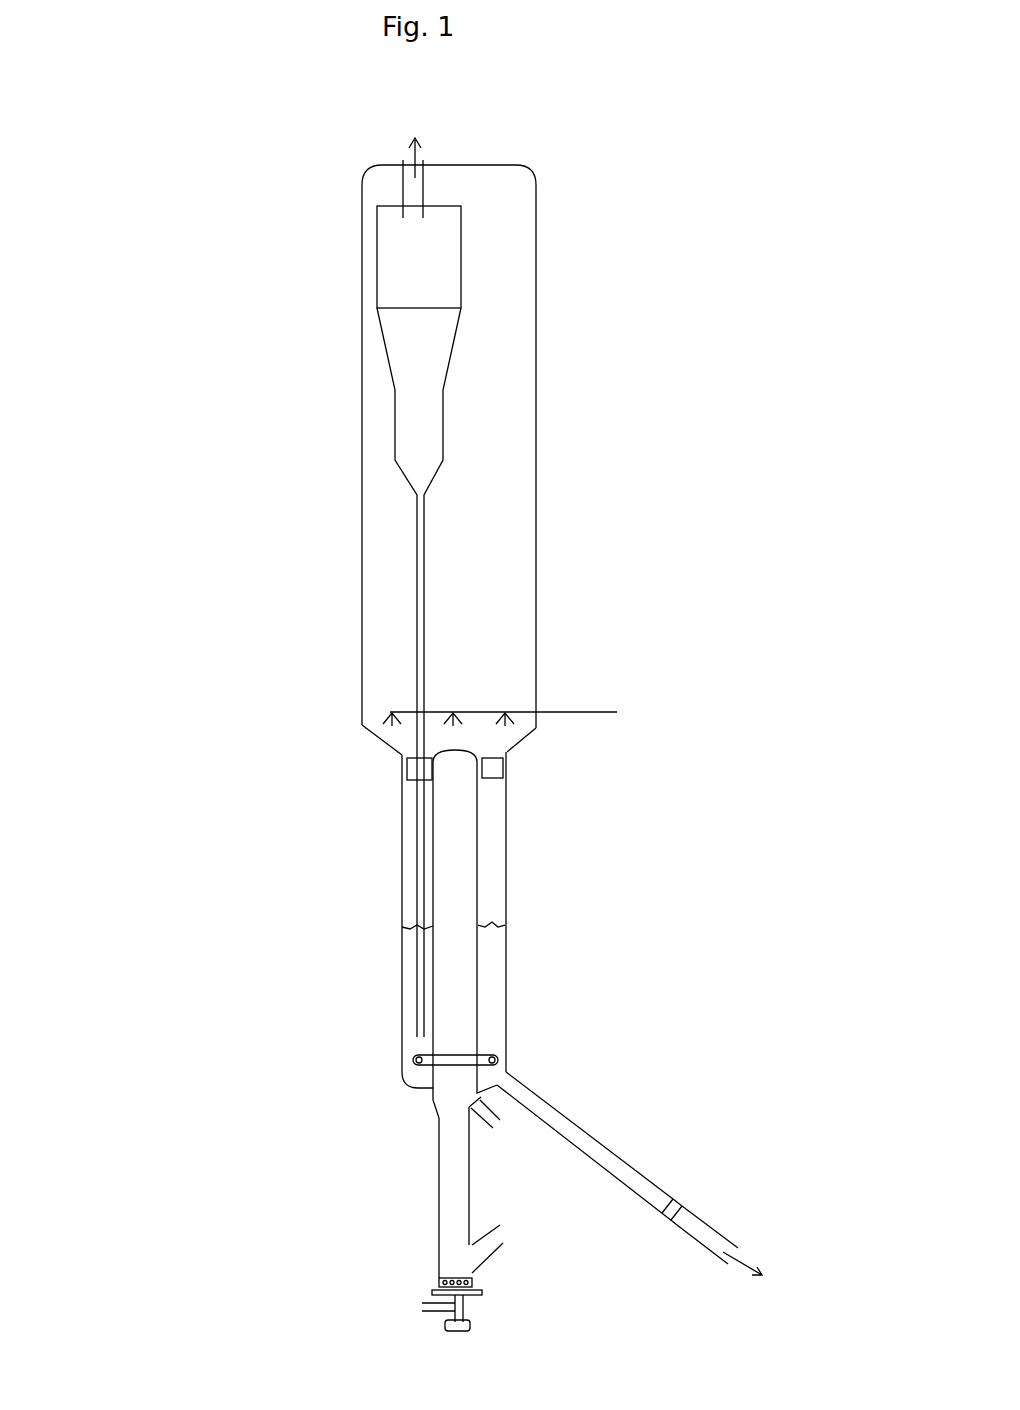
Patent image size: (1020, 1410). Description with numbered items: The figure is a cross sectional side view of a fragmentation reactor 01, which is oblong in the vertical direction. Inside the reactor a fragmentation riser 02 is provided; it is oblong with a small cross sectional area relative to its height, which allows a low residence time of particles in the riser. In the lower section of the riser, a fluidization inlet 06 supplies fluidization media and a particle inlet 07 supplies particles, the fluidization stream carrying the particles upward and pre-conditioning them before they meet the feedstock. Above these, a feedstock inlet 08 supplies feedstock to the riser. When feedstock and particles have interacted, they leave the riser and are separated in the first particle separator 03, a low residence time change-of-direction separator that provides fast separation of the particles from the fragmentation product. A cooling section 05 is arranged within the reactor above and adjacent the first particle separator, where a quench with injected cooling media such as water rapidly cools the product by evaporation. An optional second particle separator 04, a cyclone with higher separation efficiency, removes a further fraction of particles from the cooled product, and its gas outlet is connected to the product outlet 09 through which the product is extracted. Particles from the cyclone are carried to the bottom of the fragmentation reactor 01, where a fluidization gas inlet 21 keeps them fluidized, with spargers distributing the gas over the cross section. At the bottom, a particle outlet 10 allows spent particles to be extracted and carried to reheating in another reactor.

The fragmentation reactor 01 is at (205, 191).
The fragmentation riser 02 is at (437, 957).
The first particle separator 03 is at (512, 773).
The second particle separator 04 is at (446, 285).
The cooling section 05 is at (495, 724).
The fluidization inlet 06 is at (405, 1300).
The particle inlet 07 is at (512, 1226).
The feedstock inlet 08 is at (500, 1138).
The product outlet 09 is at (427, 147).
The particle outlet 10 is at (741, 1282).
The fluidization gas inlet 21 is at (496, 1057).